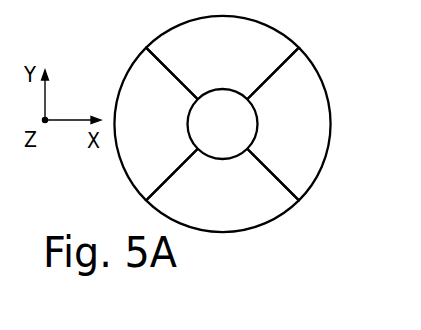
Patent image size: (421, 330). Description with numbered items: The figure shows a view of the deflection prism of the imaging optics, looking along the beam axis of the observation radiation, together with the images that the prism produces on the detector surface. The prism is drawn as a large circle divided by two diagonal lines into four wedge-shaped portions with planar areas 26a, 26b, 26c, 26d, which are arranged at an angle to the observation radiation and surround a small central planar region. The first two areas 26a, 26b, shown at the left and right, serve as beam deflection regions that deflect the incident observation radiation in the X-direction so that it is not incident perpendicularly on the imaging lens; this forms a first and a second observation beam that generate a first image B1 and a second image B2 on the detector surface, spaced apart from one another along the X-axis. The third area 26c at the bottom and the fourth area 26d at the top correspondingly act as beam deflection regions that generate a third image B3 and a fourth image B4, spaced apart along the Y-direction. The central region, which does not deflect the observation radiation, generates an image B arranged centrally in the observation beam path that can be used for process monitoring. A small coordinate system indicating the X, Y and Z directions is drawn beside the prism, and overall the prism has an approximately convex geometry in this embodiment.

The first planar area 26a is at (140, 166).
The second planar area 26b is at (303, 172).
The third planar area 26c is at (252, 215).
The fourth planar area 26d is at (187, 42).
The central image B is at (223, 124).
The first image B1 is at (154, 127).
The second image B2 is at (293, 127).
The third image B3 is at (222, 197).
The fourth image B4 is at (221, 52).